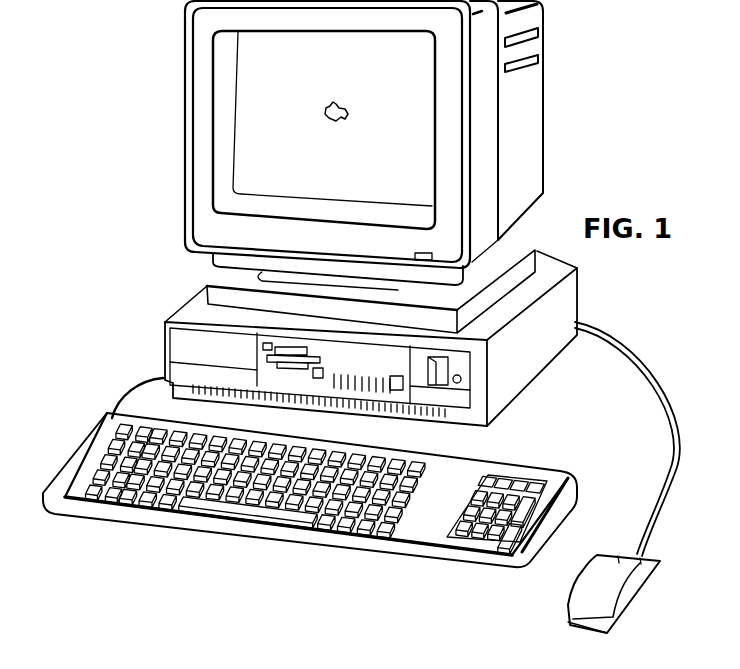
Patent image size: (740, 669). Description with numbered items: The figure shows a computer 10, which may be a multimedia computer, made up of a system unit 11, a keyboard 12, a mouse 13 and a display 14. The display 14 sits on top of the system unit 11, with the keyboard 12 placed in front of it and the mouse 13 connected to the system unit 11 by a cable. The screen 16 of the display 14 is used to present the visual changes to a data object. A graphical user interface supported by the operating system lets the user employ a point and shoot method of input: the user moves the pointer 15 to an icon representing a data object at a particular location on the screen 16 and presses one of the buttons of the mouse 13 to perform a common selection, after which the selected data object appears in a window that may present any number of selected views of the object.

The computer 10 is at (138, 201).
The system unit 11 is at (163, 339).
The keyboard 12 is at (66, 517).
The mouse 13 is at (647, 583).
The display 14 is at (186, 121).
The cursor 15 is at (333, 102).
The screen 16 is at (299, 153).